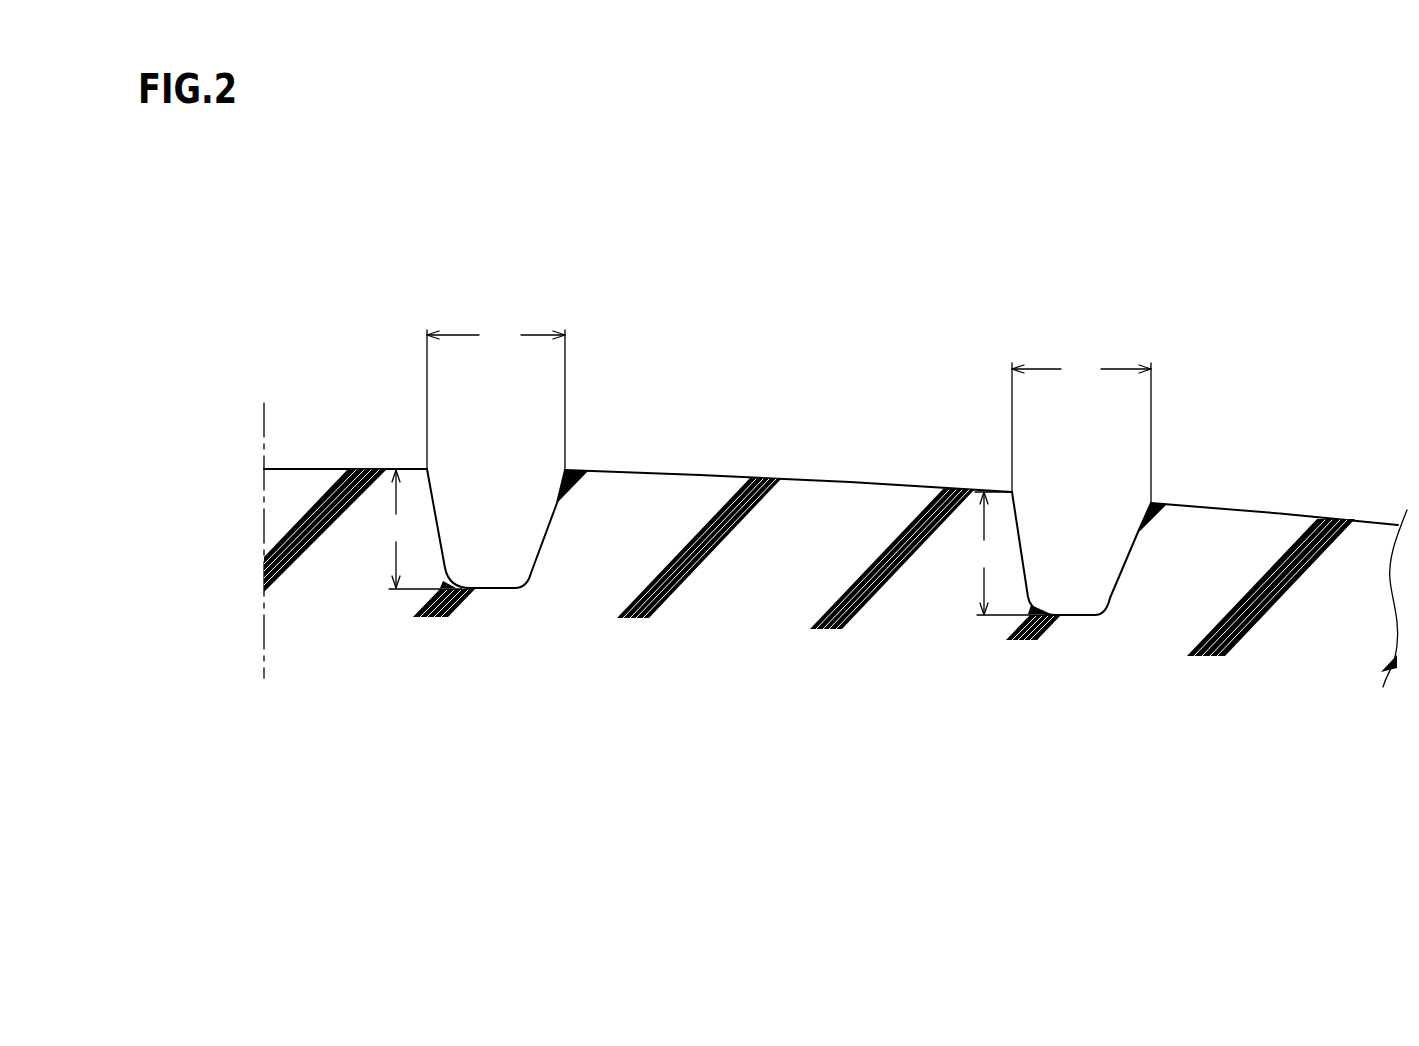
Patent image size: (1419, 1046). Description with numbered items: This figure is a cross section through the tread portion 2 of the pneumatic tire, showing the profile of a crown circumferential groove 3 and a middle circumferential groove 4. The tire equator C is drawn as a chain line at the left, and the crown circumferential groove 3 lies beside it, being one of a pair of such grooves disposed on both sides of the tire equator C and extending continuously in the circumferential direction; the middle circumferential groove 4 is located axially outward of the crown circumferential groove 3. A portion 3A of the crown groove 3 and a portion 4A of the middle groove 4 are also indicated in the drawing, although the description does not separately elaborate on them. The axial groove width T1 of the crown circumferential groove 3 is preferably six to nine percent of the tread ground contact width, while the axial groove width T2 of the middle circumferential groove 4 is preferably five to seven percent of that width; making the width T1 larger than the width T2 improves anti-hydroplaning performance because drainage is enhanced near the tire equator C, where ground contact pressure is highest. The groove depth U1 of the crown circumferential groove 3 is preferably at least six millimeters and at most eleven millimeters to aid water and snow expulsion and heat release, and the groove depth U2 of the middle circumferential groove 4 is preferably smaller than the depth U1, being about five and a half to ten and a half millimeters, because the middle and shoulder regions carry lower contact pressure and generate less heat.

The tread portion 2 is at (831, 491).
The crown circumferential groove 3 is at (496, 485).
The groove bottom of shoulder main groove 3A is at (500, 508).
The middle circumferential groove 4 is at (1081, 513).
The groove bottom of center main groove 4A is at (1078, 537).
The tire equator C is at (264, 526).
The axial groove width of the crown circumferential grooves T1 is at (496, 394).
The axial groove width of the middle circumferential grooves T2 is at (1081, 428).
The groove depth of the crown circumferential grooves U1 is at (422, 529).
The groove depth of the middle circumferential grooves U2 is at (1012, 553).